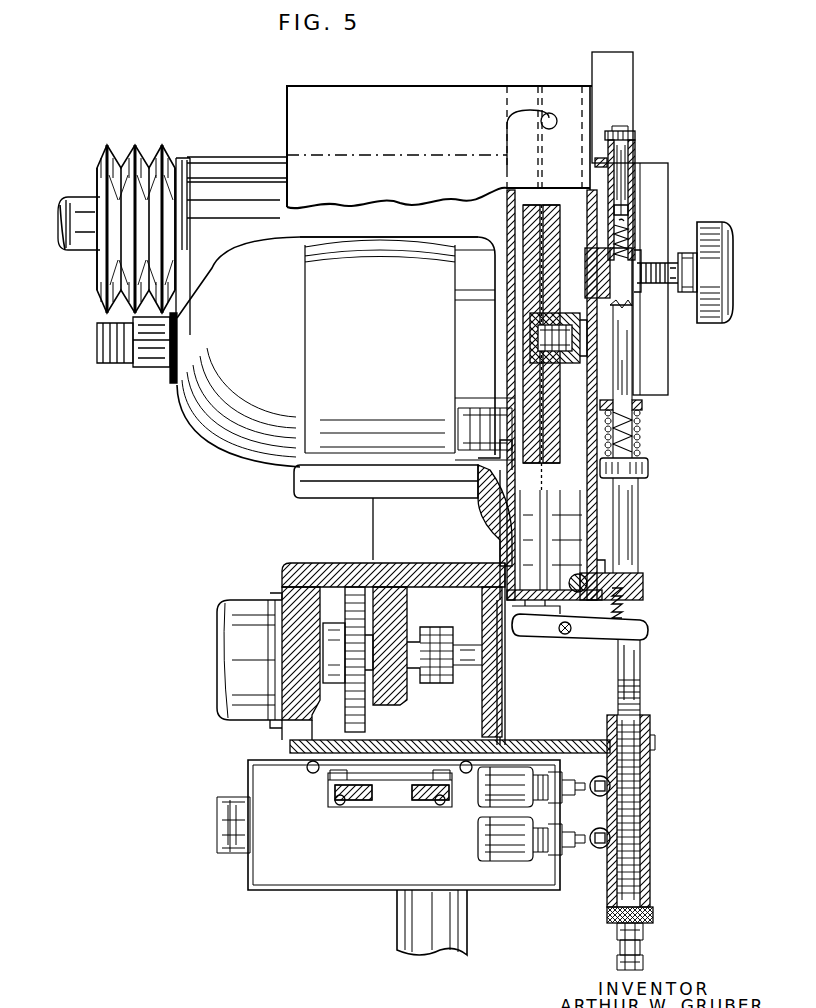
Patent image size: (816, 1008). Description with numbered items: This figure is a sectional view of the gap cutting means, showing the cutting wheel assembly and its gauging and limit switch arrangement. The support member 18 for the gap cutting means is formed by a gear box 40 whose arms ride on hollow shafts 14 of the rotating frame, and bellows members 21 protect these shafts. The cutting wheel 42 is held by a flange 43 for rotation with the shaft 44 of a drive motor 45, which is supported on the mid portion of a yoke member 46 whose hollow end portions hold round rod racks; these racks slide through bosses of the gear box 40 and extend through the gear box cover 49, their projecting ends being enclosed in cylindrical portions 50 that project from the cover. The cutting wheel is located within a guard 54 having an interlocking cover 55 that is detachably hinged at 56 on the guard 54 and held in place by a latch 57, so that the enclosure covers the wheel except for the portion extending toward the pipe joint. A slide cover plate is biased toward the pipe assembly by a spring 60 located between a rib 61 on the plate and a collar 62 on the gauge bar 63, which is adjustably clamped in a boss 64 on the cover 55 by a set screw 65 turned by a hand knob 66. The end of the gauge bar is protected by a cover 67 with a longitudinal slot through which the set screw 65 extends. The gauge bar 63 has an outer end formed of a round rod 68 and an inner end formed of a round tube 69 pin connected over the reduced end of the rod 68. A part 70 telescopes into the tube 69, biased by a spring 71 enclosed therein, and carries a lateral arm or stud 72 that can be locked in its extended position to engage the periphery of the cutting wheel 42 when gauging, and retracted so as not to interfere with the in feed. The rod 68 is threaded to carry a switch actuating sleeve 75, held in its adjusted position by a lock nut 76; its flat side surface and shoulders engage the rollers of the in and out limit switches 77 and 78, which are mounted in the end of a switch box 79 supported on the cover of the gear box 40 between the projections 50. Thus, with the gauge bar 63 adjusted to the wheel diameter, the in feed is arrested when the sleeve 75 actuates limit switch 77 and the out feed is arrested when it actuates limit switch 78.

The hollow shafts 14 is at (80, 199).
The support member 18 is at (373, 522).
The bellows members 21 is at (138, 162).
The gear box 40 is at (416, 562).
The cutting wheel 42 is at (546, 505).
The flange 43 is at (563, 222).
The shaft 44 is at (570, 365).
The drive motor 45 is at (252, 456).
The yoke member 46 is at (308, 492).
The gear box cover 49 is at (282, 740).
The cylindrical portions 50 is at (400, 926).
The guard 54 is at (508, 520).
The cover 55 is at (596, 525).
The hinge 56 is at (552, 112).
The latch 57 is at (598, 640).
The spring 60 is at (642, 438).
The rib 61 is at (642, 408).
The collar 62 is at (650, 465).
The gauge bar 63 is at (640, 535).
The boss 64 is at (647, 250).
The set screw 65 is at (656, 283).
The hand knob 66 is at (732, 305).
The cover 67 is at (668, 176).
The round rod 68 is at (642, 688).
The round tube 69 is at (634, 166).
The part 70 is at (632, 162).
The spring 71 is at (632, 236).
The arm or stud 72 is at (633, 128).
The switch actuating sleeve 75 is at (650, 818).
The lock nut 76 is at (612, 916).
The in limit switch 77 is at (493, 838).
The out limit switch 78 is at (493, 800).
The switch box 79 is at (335, 892).